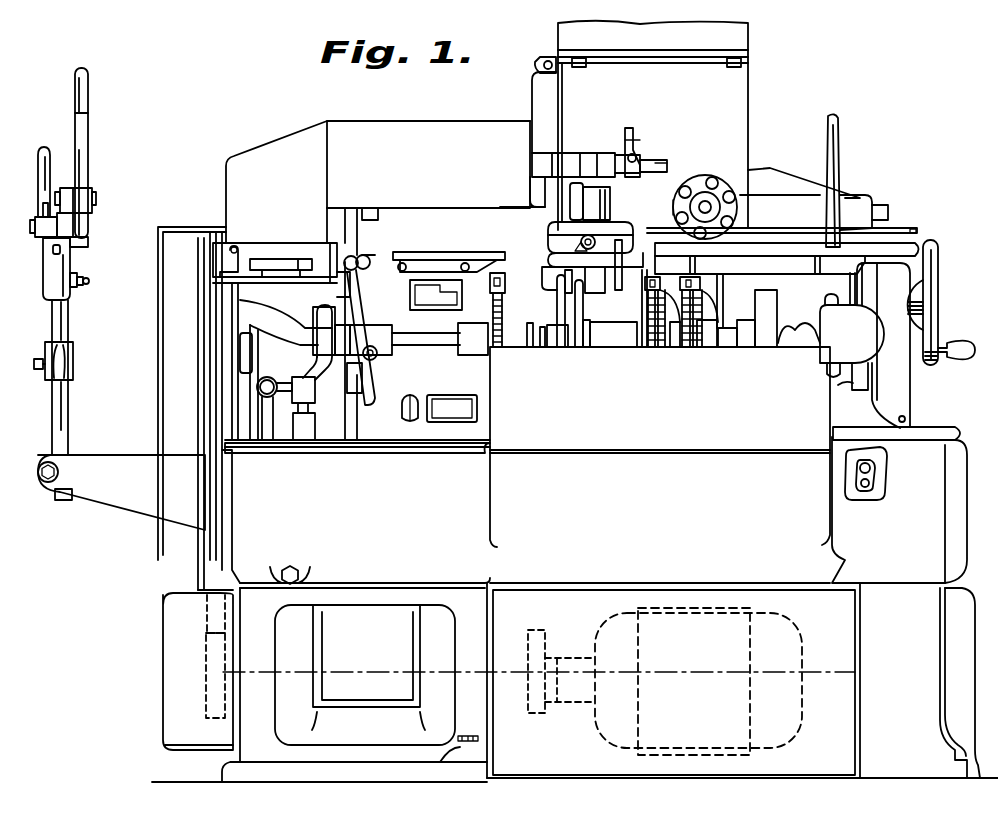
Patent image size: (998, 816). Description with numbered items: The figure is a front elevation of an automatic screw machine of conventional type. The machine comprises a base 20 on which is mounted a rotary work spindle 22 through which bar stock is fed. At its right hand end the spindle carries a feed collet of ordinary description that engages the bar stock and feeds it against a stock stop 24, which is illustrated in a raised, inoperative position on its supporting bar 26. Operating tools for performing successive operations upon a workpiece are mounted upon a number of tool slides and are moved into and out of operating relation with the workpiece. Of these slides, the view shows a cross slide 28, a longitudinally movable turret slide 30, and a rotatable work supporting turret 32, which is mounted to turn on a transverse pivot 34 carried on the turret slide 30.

The base 20 is at (650, 508).
The rotary work spindle 22 is at (618, 187).
The stock stop 24 is at (628, 138).
The supporting bar 26 is at (653, 163).
The cross slide 28 is at (619, 250).
The turret slide 30 is at (855, 205).
The work supporting turret 32 is at (718, 188).
The transverse pivot 34 is at (706, 207).